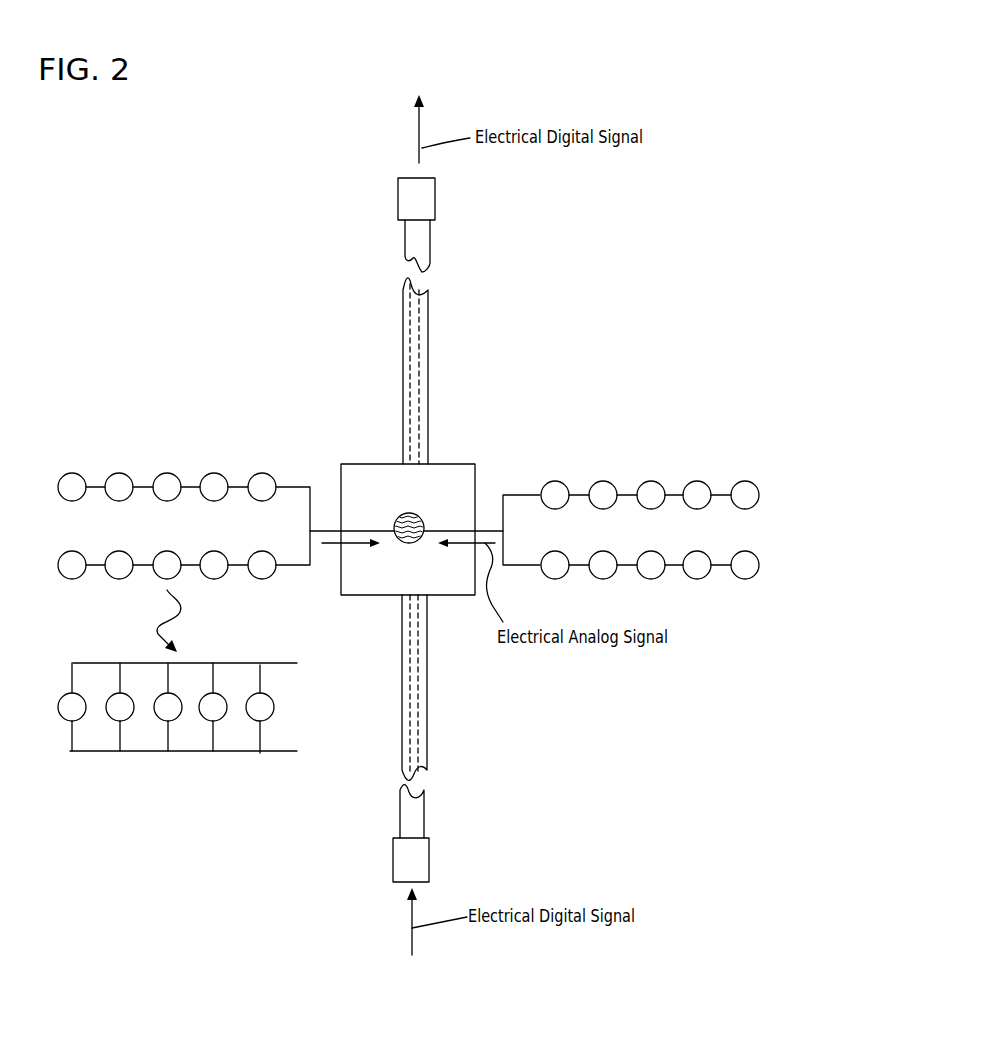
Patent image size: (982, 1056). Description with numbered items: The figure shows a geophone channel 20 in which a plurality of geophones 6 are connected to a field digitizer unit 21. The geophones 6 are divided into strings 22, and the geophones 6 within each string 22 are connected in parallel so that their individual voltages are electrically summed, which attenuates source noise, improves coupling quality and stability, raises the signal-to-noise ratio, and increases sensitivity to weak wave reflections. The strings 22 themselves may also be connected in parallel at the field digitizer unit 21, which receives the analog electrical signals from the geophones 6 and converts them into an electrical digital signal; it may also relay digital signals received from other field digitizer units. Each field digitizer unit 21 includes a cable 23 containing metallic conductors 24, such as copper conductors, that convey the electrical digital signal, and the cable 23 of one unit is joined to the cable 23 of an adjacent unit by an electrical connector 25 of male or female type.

The geophone channel 20 is at (250, 239).
The geophone 6 is at (72, 472).
The field digitizer unit 21 is at (452, 464).
The string 22 is at (716, 469).
The cable 23 is at (427, 330).
The metallic conductor 24 is at (420, 373).
The electrical connector 25 is at (435, 207).